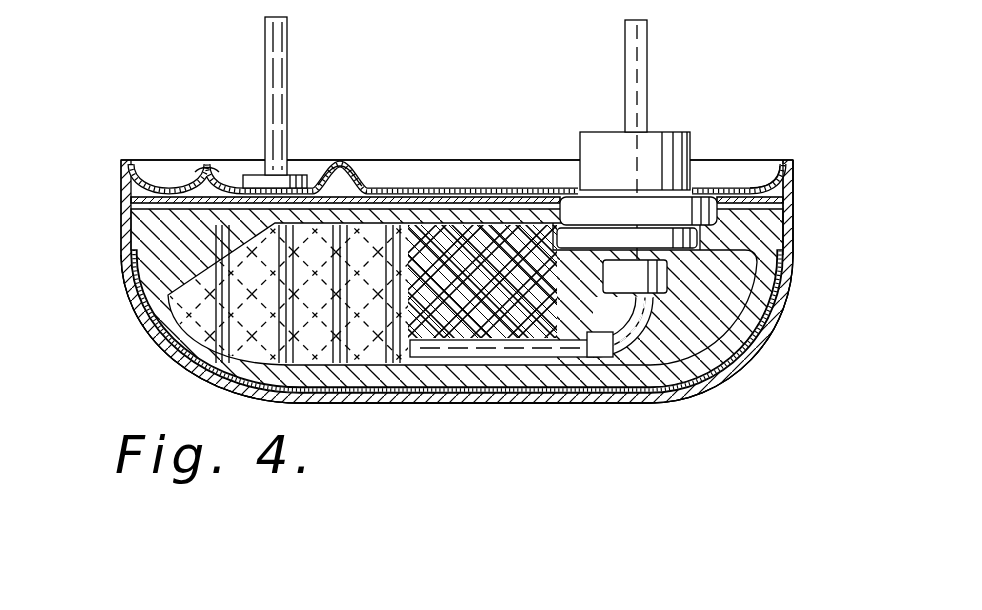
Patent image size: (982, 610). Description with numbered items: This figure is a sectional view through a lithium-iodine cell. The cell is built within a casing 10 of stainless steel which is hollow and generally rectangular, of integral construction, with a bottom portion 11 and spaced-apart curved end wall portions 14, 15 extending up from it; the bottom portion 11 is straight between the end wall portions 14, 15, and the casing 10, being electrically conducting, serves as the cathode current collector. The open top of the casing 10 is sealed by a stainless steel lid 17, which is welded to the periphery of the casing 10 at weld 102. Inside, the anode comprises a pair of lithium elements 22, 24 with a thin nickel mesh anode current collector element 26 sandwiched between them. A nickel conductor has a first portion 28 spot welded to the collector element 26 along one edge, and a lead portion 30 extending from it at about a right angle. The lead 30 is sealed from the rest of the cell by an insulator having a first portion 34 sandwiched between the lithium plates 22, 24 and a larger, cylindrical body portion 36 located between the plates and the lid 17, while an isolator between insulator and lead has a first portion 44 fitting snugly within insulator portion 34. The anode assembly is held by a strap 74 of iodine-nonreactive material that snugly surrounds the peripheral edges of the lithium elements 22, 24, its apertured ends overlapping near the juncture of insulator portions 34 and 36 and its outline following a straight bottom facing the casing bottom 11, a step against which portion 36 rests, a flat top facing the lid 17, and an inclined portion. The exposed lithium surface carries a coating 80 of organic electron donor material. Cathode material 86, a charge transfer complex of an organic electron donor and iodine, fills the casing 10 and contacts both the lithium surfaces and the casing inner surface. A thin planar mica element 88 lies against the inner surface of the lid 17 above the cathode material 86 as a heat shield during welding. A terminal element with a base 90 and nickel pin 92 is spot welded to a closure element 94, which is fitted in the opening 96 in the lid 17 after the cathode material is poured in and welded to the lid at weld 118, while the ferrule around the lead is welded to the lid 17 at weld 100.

The casing 10 is at (843, 113).
The bottom portion 11 is at (485, 403).
The end wall portion 14 is at (122, 276).
The end wall portion 15 is at (797, 212).
The lid 17 is at (168, 160).
The lithium element 22 is at (377, 330).
The lithium element 24 is at (750, 363).
The anode current collector element 26 is at (452, 258).
The first conductor portion 28 is at (613, 353).
The lead portion 30 is at (642, 40).
The first insulator portion 34 is at (657, 275).
The second body portion of insulator 36 is at (795, 235).
The first isolator portion 44 is at (690, 312).
The strap 74 is at (177, 323).
The coating 80 is at (190, 376).
The cathode material 86 is at (157, 229).
The heat shield element 88 is at (132, 199).
The terminal base 90 is at (258, 173).
The terminal pin 92 is at (268, 28).
The closure element 94 is at (318, 165).
The opening 96 is at (354, 180).
The weld 100 is at (700, 190).
The weld 102 is at (783, 162).
The weld 118 is at (213, 168).